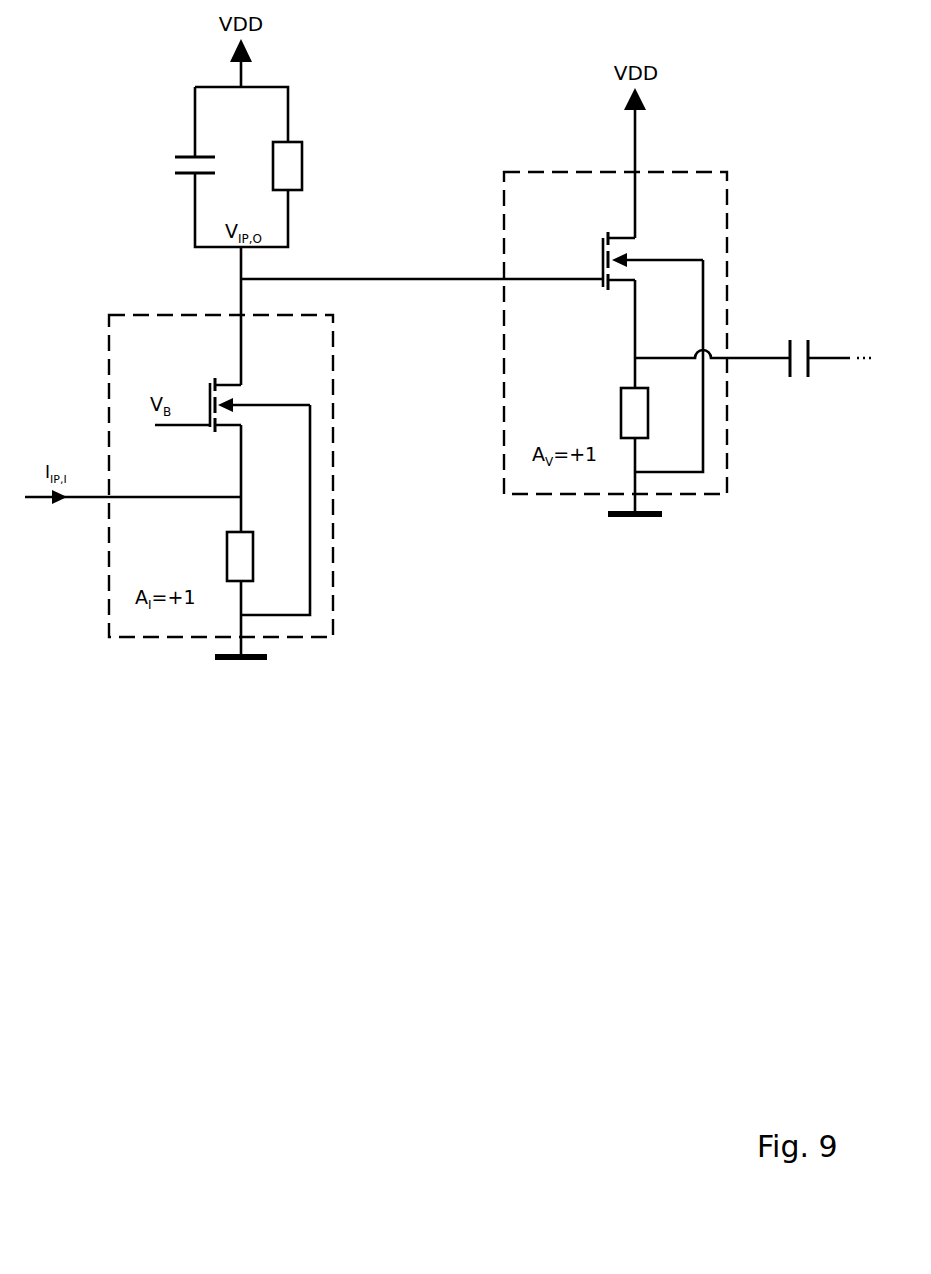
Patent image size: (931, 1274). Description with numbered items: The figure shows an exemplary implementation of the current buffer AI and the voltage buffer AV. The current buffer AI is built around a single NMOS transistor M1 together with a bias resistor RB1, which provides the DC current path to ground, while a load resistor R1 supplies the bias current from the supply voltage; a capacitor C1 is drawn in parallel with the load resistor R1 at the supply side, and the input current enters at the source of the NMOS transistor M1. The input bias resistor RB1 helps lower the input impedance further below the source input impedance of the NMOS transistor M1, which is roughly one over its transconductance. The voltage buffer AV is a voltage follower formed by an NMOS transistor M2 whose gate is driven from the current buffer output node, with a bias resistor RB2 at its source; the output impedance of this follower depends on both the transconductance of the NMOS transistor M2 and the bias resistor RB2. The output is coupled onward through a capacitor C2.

The capacitor C1 is at (180, 169).
The resistor R1 is at (303, 166).
The NMOS transistor M1 is at (232, 404).
The bias resistor RB1 is at (261, 556).
The NMOS transistor M2 is at (653, 260).
The bias resistor RB2 is at (655, 413).
The capacitor C2 is at (801, 344).